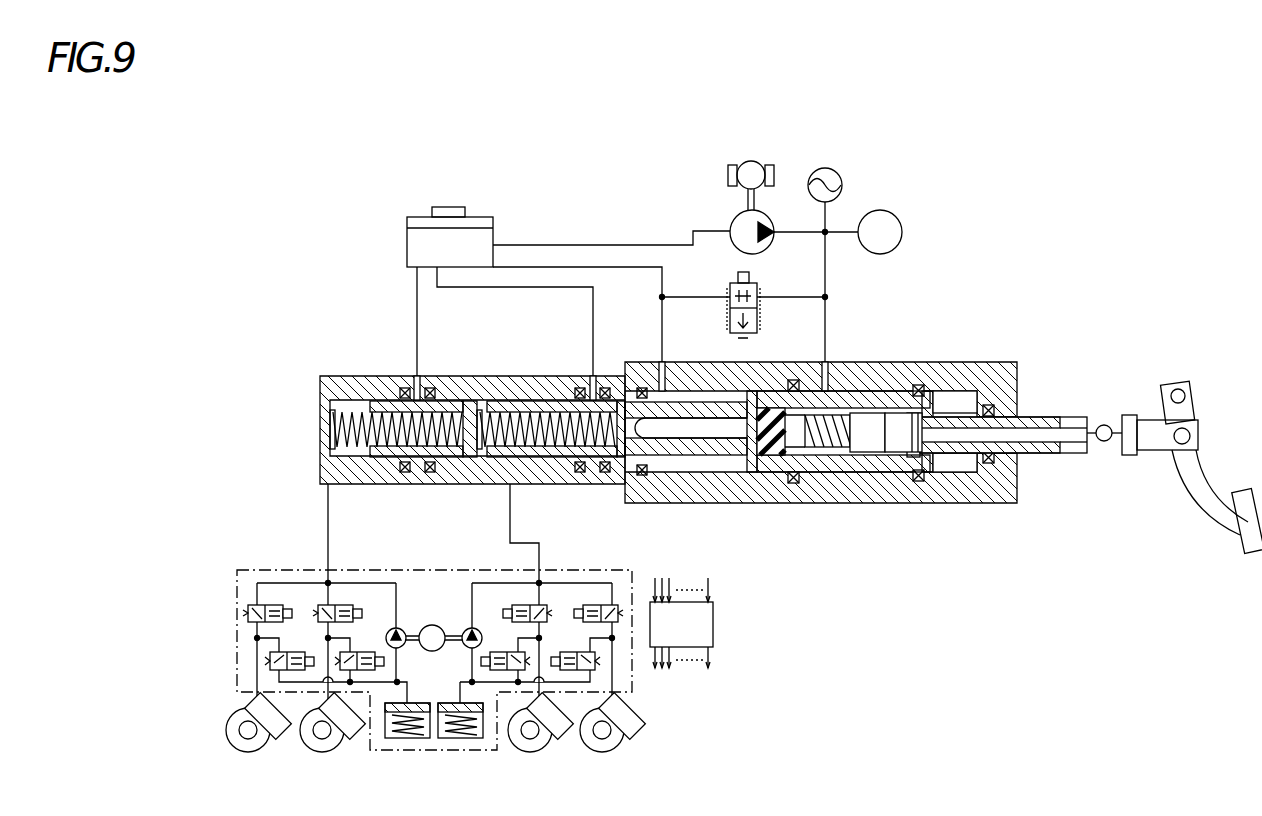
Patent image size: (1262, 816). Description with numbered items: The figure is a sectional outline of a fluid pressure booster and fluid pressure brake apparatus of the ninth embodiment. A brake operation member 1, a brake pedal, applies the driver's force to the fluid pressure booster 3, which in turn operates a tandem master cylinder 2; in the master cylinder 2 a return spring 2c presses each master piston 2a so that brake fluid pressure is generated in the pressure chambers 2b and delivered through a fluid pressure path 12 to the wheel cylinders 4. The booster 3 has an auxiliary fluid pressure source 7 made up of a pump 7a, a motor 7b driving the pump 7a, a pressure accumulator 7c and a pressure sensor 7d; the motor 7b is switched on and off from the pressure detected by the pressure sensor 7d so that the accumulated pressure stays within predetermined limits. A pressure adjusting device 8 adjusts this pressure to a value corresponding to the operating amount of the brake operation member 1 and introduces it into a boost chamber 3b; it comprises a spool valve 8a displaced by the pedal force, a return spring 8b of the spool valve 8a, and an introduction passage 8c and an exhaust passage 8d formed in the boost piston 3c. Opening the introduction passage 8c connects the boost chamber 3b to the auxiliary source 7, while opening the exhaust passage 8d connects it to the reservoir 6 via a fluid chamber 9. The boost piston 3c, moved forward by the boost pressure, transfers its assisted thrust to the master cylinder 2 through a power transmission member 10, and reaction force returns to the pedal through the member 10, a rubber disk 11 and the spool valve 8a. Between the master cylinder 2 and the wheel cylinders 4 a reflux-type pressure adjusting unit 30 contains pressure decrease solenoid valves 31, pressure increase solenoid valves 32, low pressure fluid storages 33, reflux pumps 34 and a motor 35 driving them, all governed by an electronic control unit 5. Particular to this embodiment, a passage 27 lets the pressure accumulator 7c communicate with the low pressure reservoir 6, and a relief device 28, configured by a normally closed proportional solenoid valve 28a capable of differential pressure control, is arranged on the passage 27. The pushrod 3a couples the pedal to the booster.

The brake operation member 1 is at (1252, 505).
The master cylinder 2 is at (487, 423).
The master piston 2a is at (460, 405).
The pressure chamber 2b is at (352, 455).
The return spring 2c is at (331, 424).
The fluid pressure booster 3 is at (856, 433).
The push rod 3a is at (1010, 402).
The boost chamber 3b is at (1010, 380).
The boost piston 3c is at (977, 478).
The wheel cylinder 4 is at (282, 730).
The electronic control unit 5 is at (714, 624).
The reservoir 6 is at (485, 222).
The auxiliary fluid pressure source 7 is at (798, 253).
The pump 7a is at (735, 224).
The motor 7b is at (738, 164).
The pressure accumulator 7c is at (836, 171).
The pressure sensor 7d is at (895, 213).
The pressure adjusting device 8 is at (887, 433).
The spool valve 8a is at (957, 365).
The return spring 8b is at (840, 467).
The introduction passage 8c is at (918, 385).
The exhaust passage 8d is at (902, 492).
The fluid chamber 9 is at (680, 470).
The power transmission member 10 is at (712, 440).
The rubber disk 11 is at (790, 477).
The fluid pressure path 12 is at (330, 550).
The passage 27 is at (828, 305).
The relief device 28 is at (741, 315).
The solenoid valve 28a is at (736, 278).
The reflux-type pressure adjusting unit 30 is at (283, 568).
The pressure decrease solenoid valve 31 is at (270, 660).
The pressure increase solenoid valve 32 is at (250, 606).
The low pressure fluid storage 33 is at (452, 741).
The reflux pump 34 is at (399, 628).
The motor 35 is at (440, 626).